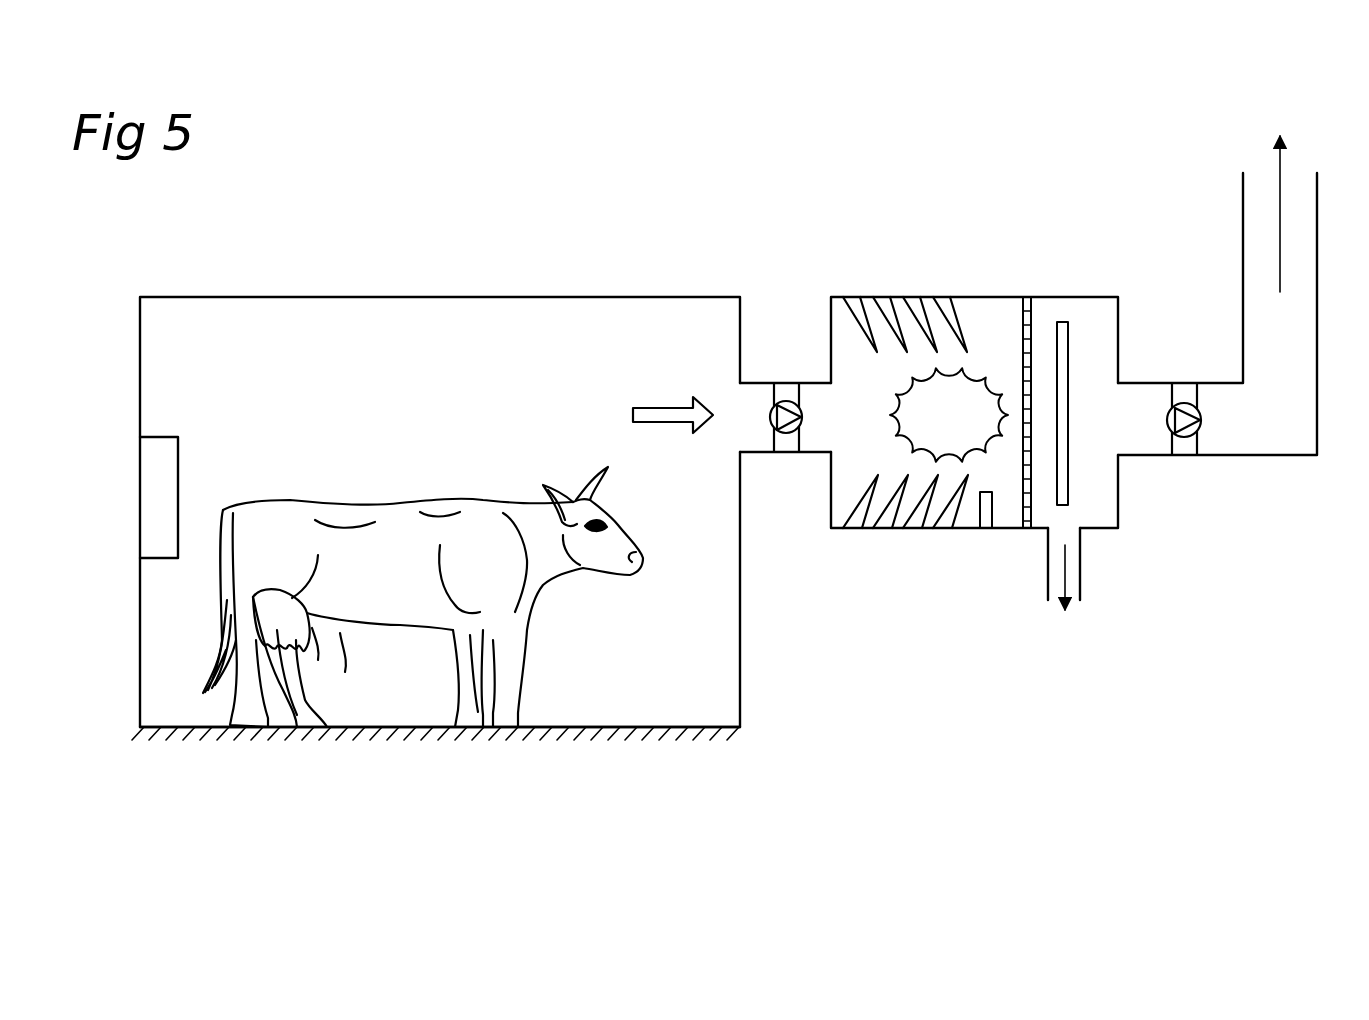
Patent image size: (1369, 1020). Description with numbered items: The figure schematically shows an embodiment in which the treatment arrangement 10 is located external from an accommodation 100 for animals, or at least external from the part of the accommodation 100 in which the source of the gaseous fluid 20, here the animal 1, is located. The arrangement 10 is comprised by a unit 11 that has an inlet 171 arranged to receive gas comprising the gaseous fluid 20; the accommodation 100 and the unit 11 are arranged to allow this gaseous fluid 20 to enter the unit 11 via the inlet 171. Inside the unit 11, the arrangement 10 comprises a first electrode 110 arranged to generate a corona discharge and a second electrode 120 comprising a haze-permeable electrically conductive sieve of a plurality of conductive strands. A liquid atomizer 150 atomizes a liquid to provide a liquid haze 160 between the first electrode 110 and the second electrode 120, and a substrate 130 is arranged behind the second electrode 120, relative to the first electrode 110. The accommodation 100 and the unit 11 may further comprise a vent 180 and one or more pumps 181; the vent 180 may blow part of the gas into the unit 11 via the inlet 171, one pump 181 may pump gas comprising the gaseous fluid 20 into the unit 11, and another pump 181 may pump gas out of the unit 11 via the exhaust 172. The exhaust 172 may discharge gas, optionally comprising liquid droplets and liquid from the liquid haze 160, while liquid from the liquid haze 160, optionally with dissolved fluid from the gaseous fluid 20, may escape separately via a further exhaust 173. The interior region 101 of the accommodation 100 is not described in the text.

The animal 1 is at (570, 622).
The arrangement 10 is at (1031, 286).
The unit 11 is at (1086, 287).
The gaseous fluid 20 is at (485, 397).
The accommodation 100 is at (289, 282).
The interior space of building 101 is at (383, 352).
The first electrode 110 is at (897, 288).
The second electrode 120 is at (1028, 502).
The substrate 130 is at (1062, 466).
The liquid atomizer 150 is at (985, 520).
The liquid haze 160 is at (955, 403).
The inlet 171 is at (748, 417).
The exhaust 172 is at (1297, 181).
The exhaust 173 is at (1062, 590).
The vent 180 is at (157, 509).
The pump 181 is at (788, 392).